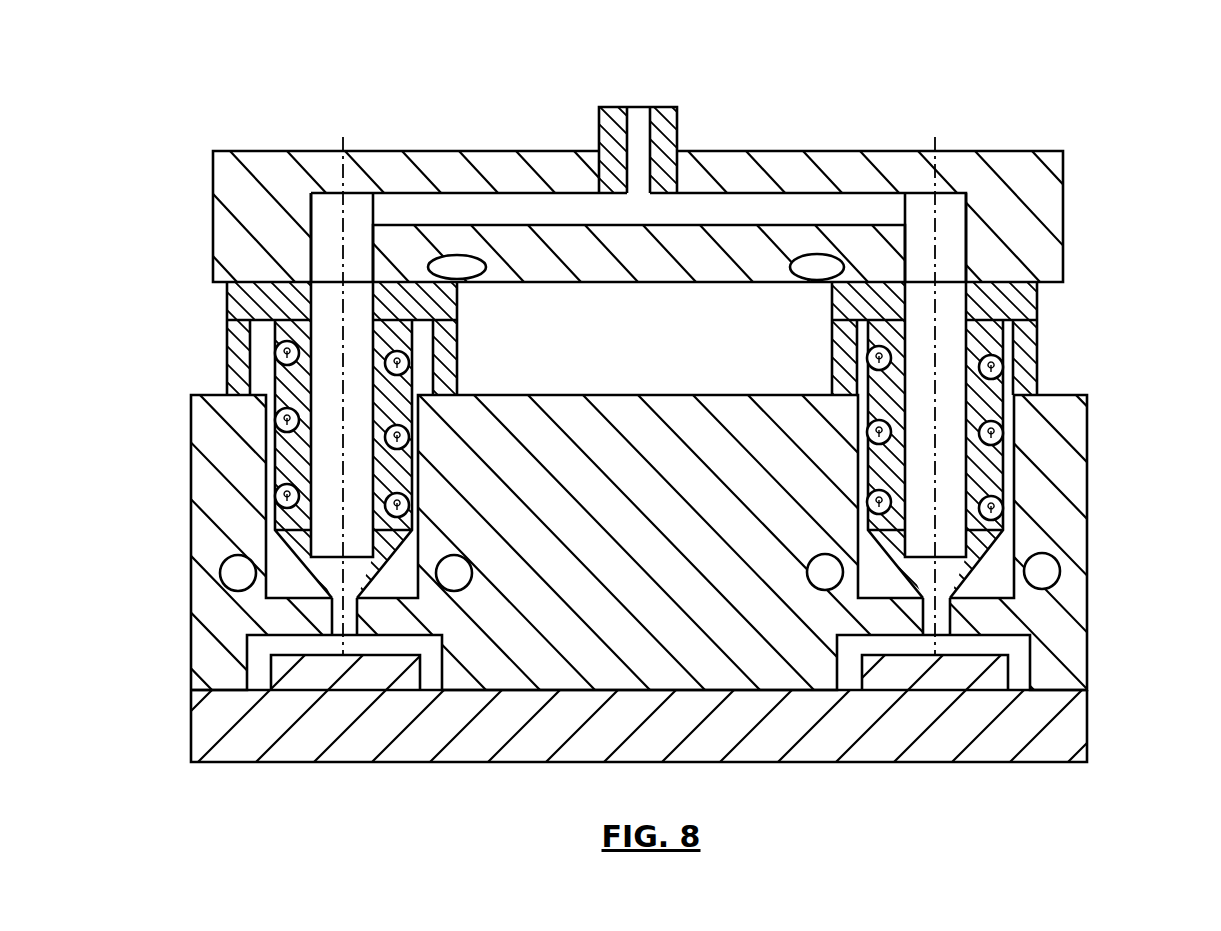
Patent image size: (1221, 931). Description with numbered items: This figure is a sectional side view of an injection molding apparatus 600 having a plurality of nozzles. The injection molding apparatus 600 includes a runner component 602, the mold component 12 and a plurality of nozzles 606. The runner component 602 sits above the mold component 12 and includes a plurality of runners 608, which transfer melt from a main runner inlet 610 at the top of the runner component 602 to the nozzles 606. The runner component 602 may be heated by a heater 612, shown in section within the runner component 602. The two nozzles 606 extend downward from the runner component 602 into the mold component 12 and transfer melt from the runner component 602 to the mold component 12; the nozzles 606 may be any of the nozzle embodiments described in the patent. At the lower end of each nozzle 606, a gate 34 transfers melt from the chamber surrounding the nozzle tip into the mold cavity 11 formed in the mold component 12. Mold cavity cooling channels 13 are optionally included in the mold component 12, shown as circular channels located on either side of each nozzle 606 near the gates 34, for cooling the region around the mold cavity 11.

The injection molding apparatus 600 is at (889, 94).
The runner component 602 is at (1027, 152).
The nozzles 606 is at (412, 388).
The runners 608 is at (763, 210).
The main runner inlet 610 is at (638, 117).
The heater 612 is at (480, 272).
The mold component 12 is at (1090, 432).
The mold cavity 11 is at (432, 680).
The mold cavity cooling channels 13 is at (236, 576).
The gate 34 is at (355, 640).